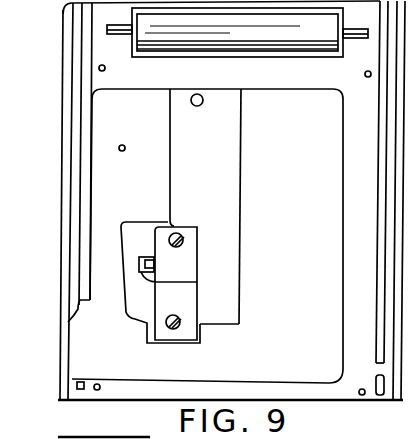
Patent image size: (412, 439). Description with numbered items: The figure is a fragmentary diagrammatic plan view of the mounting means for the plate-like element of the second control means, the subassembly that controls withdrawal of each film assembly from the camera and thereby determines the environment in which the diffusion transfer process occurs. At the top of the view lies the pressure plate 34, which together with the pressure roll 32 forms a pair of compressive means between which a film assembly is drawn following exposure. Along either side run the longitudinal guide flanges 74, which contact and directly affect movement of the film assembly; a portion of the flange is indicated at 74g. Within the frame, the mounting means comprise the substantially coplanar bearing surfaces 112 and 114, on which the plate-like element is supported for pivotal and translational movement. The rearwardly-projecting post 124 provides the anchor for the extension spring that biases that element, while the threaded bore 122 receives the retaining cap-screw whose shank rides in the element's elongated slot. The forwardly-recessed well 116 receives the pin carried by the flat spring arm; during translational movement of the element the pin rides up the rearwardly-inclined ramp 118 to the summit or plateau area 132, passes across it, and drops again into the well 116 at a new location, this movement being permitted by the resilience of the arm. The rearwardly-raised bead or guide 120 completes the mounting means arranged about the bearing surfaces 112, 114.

The longitudinal guide flange 74 is at (93, 48).
The frame tab 74g is at (68, 319).
The pressure plate 34 is at (218, 28).
The bearing surface 112 is at (113, 181).
The rearwardly-projecting post 124 is at (201, 96).
The threaded bore 122 is at (119, 148).
The forwardly-recessed well 116 is at (133, 240).
The bearing surface 114 is at (183, 270).
The rearwardly-inclined ramp 118 is at (139, 263).
The rearwardly-raised bead or guide 120 is at (148, 278).
The summit or plateau area 132 is at (197, 283).
The pressure roll 32 is at (330, 423).